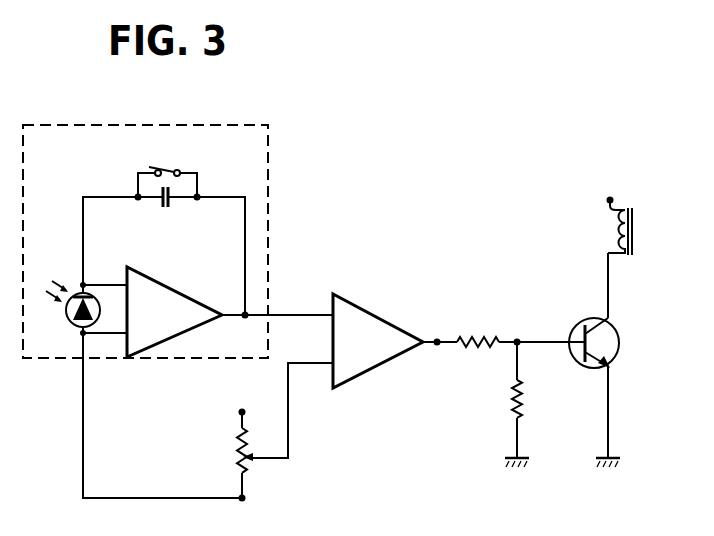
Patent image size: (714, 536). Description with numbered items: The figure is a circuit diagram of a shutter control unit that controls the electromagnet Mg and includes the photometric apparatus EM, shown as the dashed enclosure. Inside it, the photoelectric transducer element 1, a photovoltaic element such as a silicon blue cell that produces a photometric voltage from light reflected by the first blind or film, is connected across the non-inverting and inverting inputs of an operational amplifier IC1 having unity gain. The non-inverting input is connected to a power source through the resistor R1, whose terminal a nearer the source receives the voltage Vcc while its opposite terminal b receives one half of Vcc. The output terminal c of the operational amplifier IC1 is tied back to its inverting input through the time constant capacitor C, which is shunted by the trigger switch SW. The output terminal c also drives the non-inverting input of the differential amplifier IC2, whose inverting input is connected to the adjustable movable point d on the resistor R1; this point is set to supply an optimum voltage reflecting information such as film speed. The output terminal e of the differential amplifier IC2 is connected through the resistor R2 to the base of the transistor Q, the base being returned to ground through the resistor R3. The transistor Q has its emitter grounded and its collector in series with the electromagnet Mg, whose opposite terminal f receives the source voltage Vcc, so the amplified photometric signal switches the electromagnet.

The photometric apparatus EM is at (250, 126).
The trigger switch SW is at (166, 169).
The time constant capacitor C is at (168, 208).
The operational amplifier IC1 is at (166, 297).
The photoelectric transducer element 1 is at (66, 318).
The output terminal c is at (245, 318).
The differential amplifier IC2 is at (366, 360).
The output terminal e is at (437, 340).
The resistor R2 is at (483, 340).
The resistor R3 is at (521, 405).
The resistor R1 is at (238, 445).
The terminal a is at (242, 412).
The terminal b is at (242, 498).
The movable point d is at (258, 460).
The transistor Q is at (619, 352).
The electromagnet Mg is at (633, 235).
The terminal f is at (610, 200).